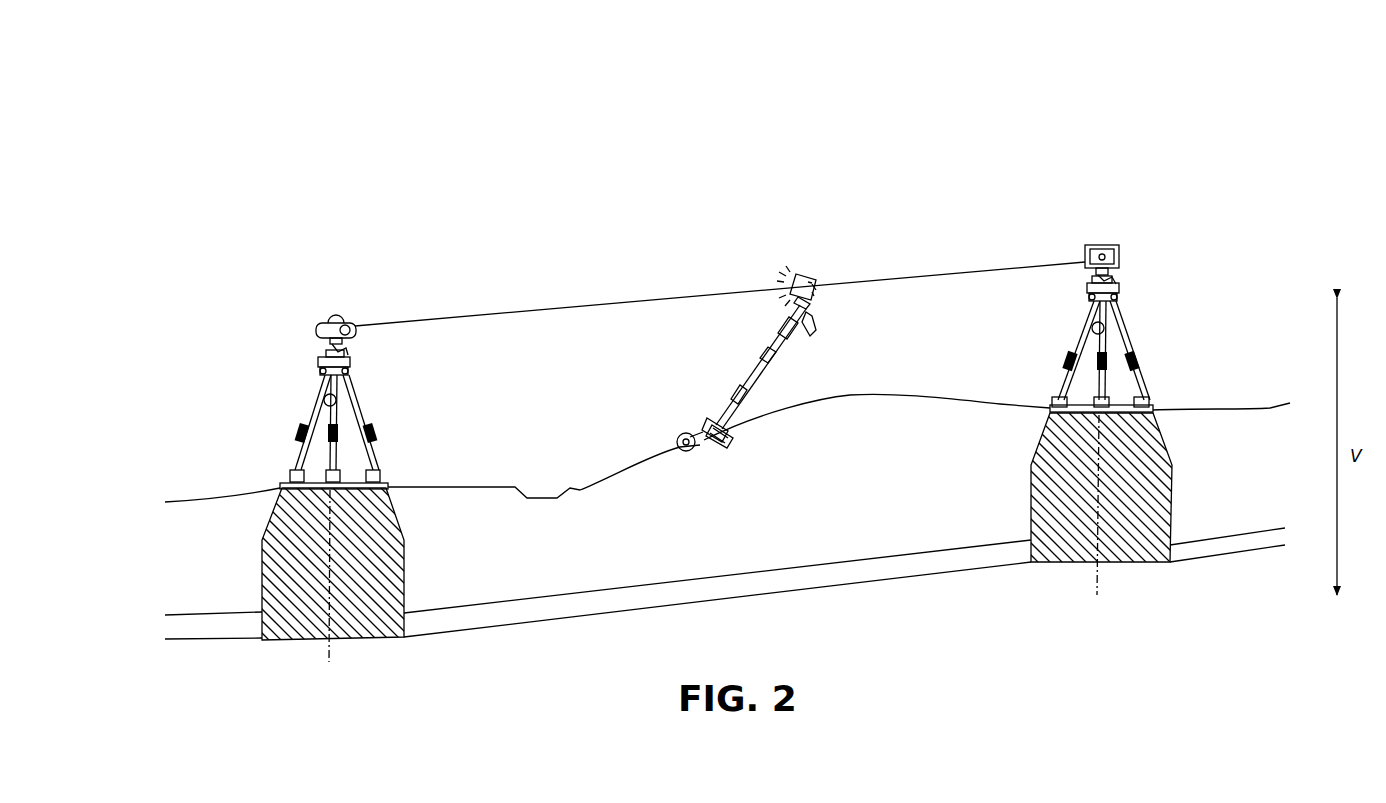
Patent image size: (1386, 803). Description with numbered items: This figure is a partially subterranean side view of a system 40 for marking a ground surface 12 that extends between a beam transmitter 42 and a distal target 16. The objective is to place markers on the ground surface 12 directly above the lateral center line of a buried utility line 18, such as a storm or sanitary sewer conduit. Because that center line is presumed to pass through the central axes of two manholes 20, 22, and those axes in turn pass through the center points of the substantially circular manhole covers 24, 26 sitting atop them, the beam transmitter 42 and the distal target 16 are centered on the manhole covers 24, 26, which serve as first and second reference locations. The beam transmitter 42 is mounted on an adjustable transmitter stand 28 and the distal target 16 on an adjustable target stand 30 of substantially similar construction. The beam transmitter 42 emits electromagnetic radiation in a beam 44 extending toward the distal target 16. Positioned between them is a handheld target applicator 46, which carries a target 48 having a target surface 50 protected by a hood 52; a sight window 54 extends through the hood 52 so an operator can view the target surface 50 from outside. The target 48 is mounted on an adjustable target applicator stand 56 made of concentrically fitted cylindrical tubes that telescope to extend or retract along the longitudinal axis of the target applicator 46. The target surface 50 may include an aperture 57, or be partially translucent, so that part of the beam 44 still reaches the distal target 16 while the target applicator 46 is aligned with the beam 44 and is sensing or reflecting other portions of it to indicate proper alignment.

The ground surface 12 is at (878, 400).
The distal target 16 is at (1129, 241).
The utility line 18 is at (534, 619).
The manhole 20 is at (246, 560).
The manhole 22 is at (1186, 476).
The manhole cover 24 is at (392, 485).
The manhole cover 26 is at (1049, 406).
The transmitter stand 28 is at (284, 395).
The target stand 30 is at (1148, 331).
The system 40 is at (684, 132).
The beam transmitter 42 is at (318, 318).
The beam 44 is at (489, 315).
The target applicator 46 is at (716, 378).
The target 48 is at (800, 270).
The target surface 50 is at (813, 293).
The hood 52 is at (808, 280).
The sight window 54 is at (790, 286).
The target applicator stand 56 is at (812, 300).
The aperture 57 is at (816, 286).